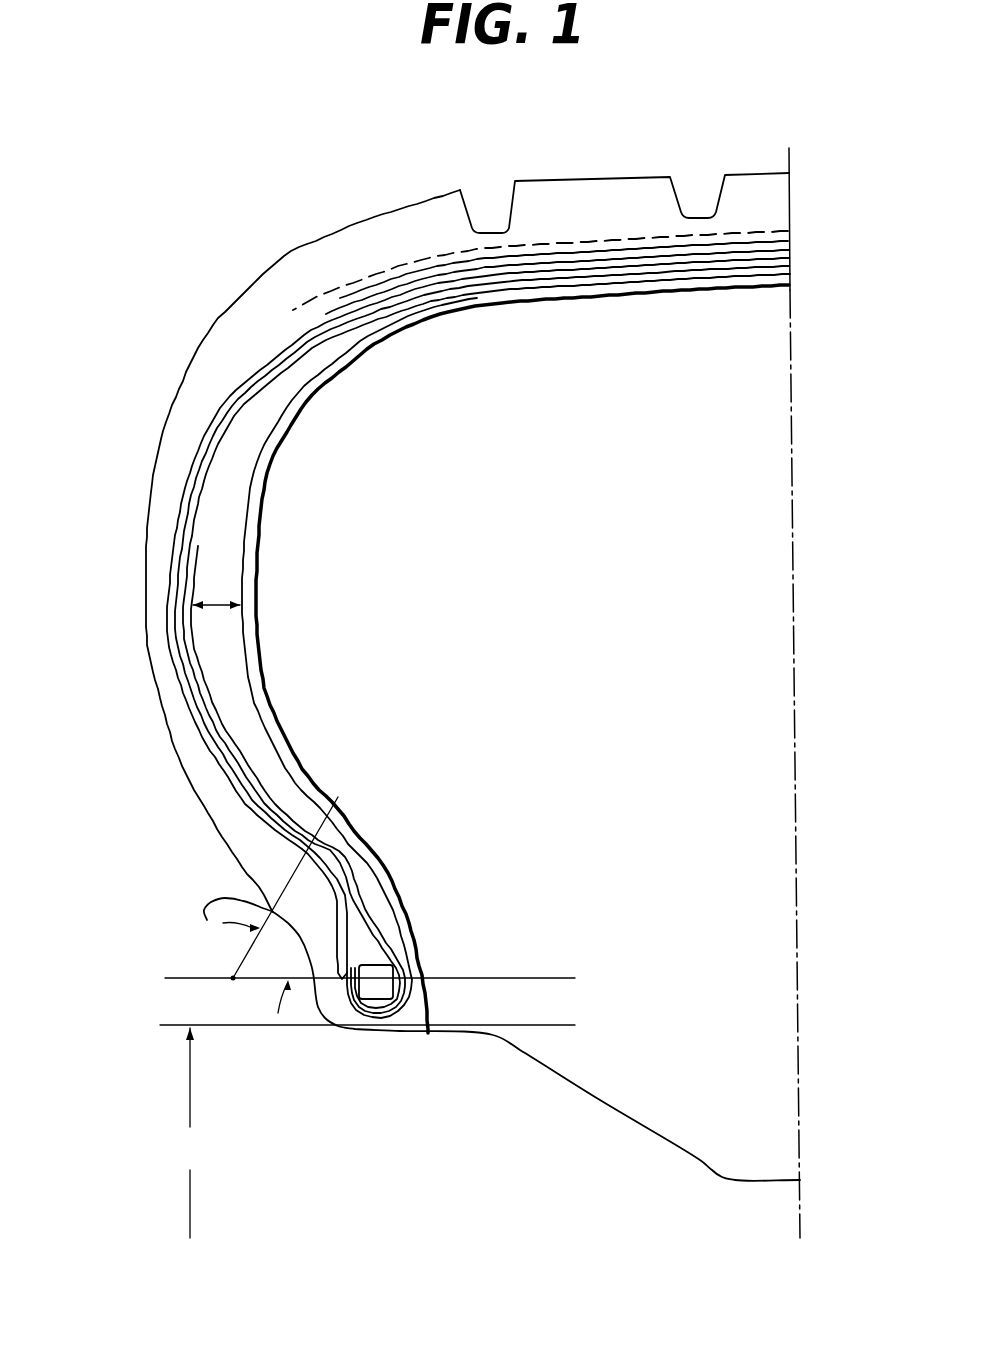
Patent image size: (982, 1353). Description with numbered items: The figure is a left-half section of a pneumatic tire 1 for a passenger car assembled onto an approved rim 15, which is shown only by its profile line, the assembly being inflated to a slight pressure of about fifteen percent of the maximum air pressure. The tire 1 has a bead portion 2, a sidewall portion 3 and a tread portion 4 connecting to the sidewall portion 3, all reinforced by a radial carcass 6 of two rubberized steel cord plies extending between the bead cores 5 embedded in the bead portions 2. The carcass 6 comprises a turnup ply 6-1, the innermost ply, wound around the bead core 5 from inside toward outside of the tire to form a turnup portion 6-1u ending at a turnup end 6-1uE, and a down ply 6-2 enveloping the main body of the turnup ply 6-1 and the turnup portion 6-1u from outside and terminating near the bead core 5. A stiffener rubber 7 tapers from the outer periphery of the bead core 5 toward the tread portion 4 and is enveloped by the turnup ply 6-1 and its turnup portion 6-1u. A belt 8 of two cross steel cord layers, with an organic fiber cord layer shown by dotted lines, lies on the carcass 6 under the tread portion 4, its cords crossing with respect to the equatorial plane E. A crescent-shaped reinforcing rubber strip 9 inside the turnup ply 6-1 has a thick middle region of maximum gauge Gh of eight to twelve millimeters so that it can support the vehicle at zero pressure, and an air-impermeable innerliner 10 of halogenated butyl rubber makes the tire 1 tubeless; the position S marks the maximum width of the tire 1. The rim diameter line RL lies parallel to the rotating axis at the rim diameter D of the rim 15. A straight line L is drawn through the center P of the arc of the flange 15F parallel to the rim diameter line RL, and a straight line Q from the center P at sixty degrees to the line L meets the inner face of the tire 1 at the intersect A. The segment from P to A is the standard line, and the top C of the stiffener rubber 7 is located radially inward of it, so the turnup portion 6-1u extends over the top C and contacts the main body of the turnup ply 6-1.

The pneumatic tire 1 is at (315, 217).
The bead portion 2 is at (413, 886).
The sidewall portion 3 is at (140, 668).
The tread portion 4 is at (566, 170).
The bead core 5 is at (383, 992).
The radial carcass 6 is at (206, 530).
The turnup ply 6-1 is at (265, 787).
The down ply 6-2 is at (240, 800).
The turnup portion 6-1u is at (406, 877).
The turnup end 6-1uE is at (209, 676).
The stiffener rubber 7 is at (373, 948).
The belt 8 is at (636, 230).
The reinforcing rubber strip 9 is at (235, 498).
The innerliner 10 is at (298, 410).
The approved rim 15 is at (525, 1060).
The flange 15F is at (225, 898).
The equatorial plane E is at (789, 158).
The position of maximum width S is at (143, 588).
The maximum gauge Gh is at (213, 605).
The straight line L is at (510, 977).
The rim diameter line RL is at (260, 1030).
The rim diameter D is at (193, 1133).
The center of arc of flange profile P is at (233, 980).
The straight line Q is at (245, 957).
The intersect A is at (342, 801).
The top of stiffener rubber C is at (333, 857).